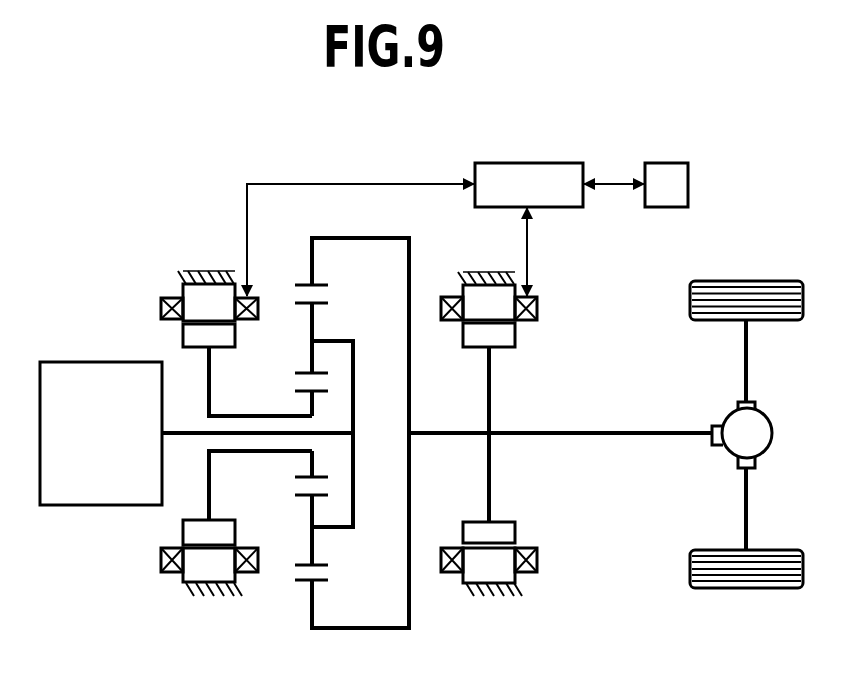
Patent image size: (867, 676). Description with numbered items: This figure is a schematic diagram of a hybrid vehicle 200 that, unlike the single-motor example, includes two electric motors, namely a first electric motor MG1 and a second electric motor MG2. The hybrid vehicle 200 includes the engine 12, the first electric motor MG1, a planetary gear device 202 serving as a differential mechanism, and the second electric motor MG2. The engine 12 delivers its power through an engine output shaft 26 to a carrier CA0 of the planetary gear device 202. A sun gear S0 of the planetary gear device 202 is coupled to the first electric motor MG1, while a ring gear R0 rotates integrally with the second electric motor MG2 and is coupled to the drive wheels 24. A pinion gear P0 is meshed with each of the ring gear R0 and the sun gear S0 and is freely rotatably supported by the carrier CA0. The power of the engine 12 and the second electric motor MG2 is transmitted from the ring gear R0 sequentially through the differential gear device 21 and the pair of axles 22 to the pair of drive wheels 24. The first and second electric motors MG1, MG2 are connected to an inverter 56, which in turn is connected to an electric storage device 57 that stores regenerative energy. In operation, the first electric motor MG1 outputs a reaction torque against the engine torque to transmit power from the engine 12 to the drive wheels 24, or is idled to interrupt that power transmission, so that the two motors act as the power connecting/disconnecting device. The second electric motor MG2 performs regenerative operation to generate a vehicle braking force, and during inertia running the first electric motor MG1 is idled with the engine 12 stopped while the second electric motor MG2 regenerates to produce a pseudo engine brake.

The hybrid vehicle 200 is at (838, 124).
The engine 12 is at (65, 367).
The engine output shaft 26 is at (186, 431).
The first electric motor MG1 is at (205, 262).
The second electric motor MG2 is at (487, 266).
The planetary gear device 202 is at (334, 410).
The ring gear R0 is at (316, 286).
The carrier CA0 is at (328, 341).
The pinion gear P0 is at (302, 382).
The sun gear S0 is at (302, 392).
The inverter 56 is at (487, 168).
The electric storage device 57 is at (667, 170).
The differential gear device 21 is at (761, 420).
The axles 22 is at (745, 360).
The drive wheels 24 is at (690, 302).